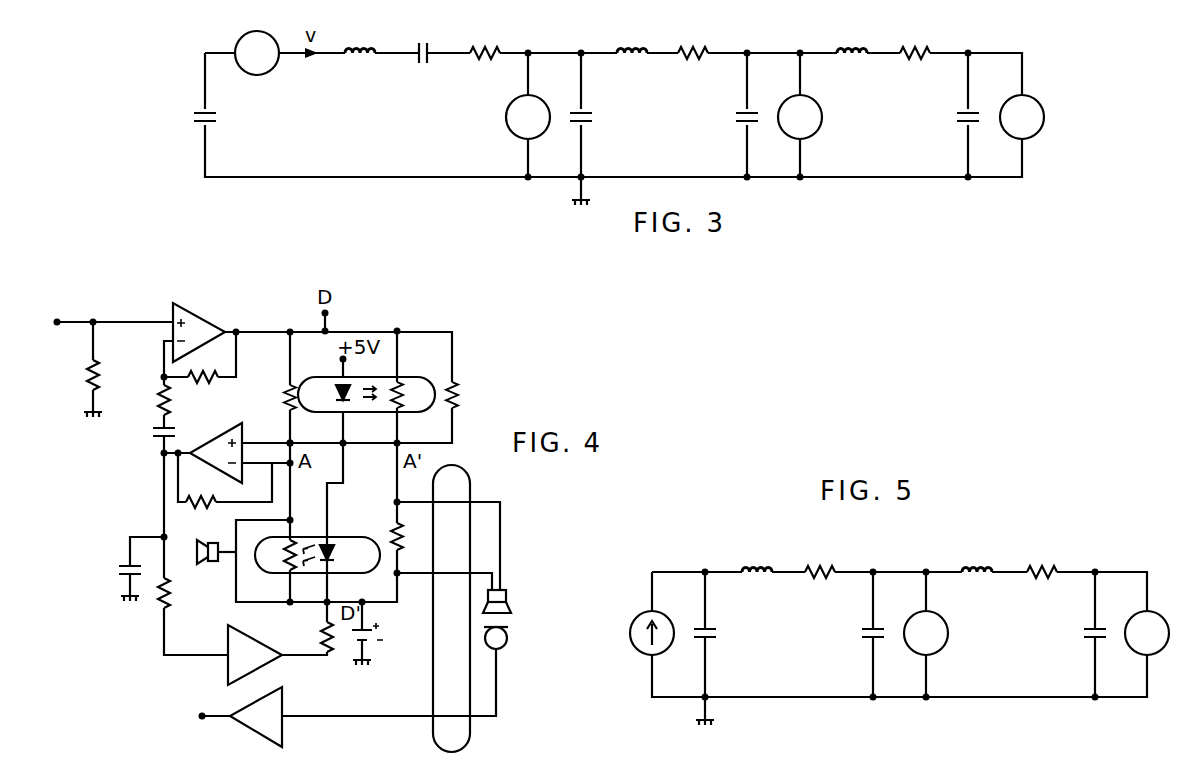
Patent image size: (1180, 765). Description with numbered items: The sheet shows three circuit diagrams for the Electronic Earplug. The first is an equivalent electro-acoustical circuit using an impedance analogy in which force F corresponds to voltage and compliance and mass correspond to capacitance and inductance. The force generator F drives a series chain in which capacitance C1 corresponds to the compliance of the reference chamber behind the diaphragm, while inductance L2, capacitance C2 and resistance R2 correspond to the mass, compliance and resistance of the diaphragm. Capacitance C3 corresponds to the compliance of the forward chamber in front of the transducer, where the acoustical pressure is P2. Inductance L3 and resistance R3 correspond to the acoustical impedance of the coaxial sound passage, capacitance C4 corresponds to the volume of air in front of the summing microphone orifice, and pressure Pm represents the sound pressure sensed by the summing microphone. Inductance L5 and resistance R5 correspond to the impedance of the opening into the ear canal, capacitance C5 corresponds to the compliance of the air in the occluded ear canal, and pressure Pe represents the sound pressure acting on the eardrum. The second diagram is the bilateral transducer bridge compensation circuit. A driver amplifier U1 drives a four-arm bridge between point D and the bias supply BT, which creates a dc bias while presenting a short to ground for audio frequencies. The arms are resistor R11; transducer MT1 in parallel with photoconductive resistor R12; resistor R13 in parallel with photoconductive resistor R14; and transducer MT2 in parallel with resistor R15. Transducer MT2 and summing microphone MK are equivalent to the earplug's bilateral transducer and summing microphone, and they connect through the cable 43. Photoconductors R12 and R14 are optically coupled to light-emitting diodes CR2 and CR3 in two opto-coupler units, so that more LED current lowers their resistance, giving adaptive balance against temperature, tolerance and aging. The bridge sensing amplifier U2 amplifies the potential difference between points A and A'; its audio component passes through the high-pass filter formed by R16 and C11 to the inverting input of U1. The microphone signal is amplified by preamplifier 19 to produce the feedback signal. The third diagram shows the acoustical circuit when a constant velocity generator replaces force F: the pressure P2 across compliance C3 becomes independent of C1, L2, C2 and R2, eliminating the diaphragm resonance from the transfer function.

In FIG. 4, the preamplifier 19 is at (348, 698).
In FIG. 4, the cable 43 is at (451, 608).
In FIG. 3, the capacitance C1 is at (224, 127).
In FIG. 3, the force F is at (257, 53).
In FIG. 3, the inductance L2 is at (359, 35).
In FIG. 3, the capacitance C2 is at (426, 38).
In FIG. 3, the resistance R2 is at (484, 36).
In FIG. 3, the acoustical pressure signal P2 is at (528, 117).
In FIG. 3, the capacitance C3 is at (600, 128).
In FIG. 5, the capacitance C3 is at (725, 645).
In FIG. 3, the inductance L3 is at (631, 35).
In FIG. 5, the inductance L3 is at (756, 554).
In FIG. 3, the resistance R3 is at (692, 36).
In FIG. 5, the resistance R3 is at (818, 555).
In FIG. 3, the capacitance C4 is at (729, 128).
In FIG. 5, the capacitance C4 is at (855, 645).
In FIG. 3, the microphone sound pressure Pm is at (800, 117).
In FIG. 5, the microphone sound pressure Pm is at (926, 633).
In FIG. 3, the inductance L5 is at (851, 35).
In FIG. 5, the inductance L5 is at (976, 554).
In FIG. 3, the resistance R5 is at (914, 36).
In FIG. 5, the resistance R5 is at (1040, 555).
In FIG. 3, the capacitance C5 is at (949, 128).
In FIG. 5, the capacitance C5 is at (1075, 645).
In FIG. 3, the eardrum sound pressure Pe is at (1022, 117).
In FIG. 5, the eardrum sound pressure Pe is at (1147, 633).
In FIG. 4, the driver amplifier U1 is at (202, 321).
In FIG. 4, the bridge sensing amplifier U2 is at (216, 441).
In FIG. 4, the resistor R16 is at (144, 398).
In FIG. 4, the capacitor C11 is at (146, 435).
In FIG. 4, the resistor R11 is at (274, 393).
In FIG. 4, the resistor R13 is at (471, 392).
In FIG. 4, the light-emitting diode CR3 is at (366, 408).
In FIG. 4, the photoconductive resistor R14 is at (418, 410).
In FIG. 4, the resistor R15 is at (395, 520).
In FIG. 4, the light-emitting diode CR2 is at (317, 540).
In FIG. 4, the photoconductive resistor R12 is at (271, 570).
In FIG. 4, the transducer MT1 is at (208, 539).
In FIG. 4, the bilateral transducer MT2 is at (524, 598).
In FIG. 4, the summing microphone MK is at (519, 638).
In FIG. 4, the bias supply BT is at (382, 633).